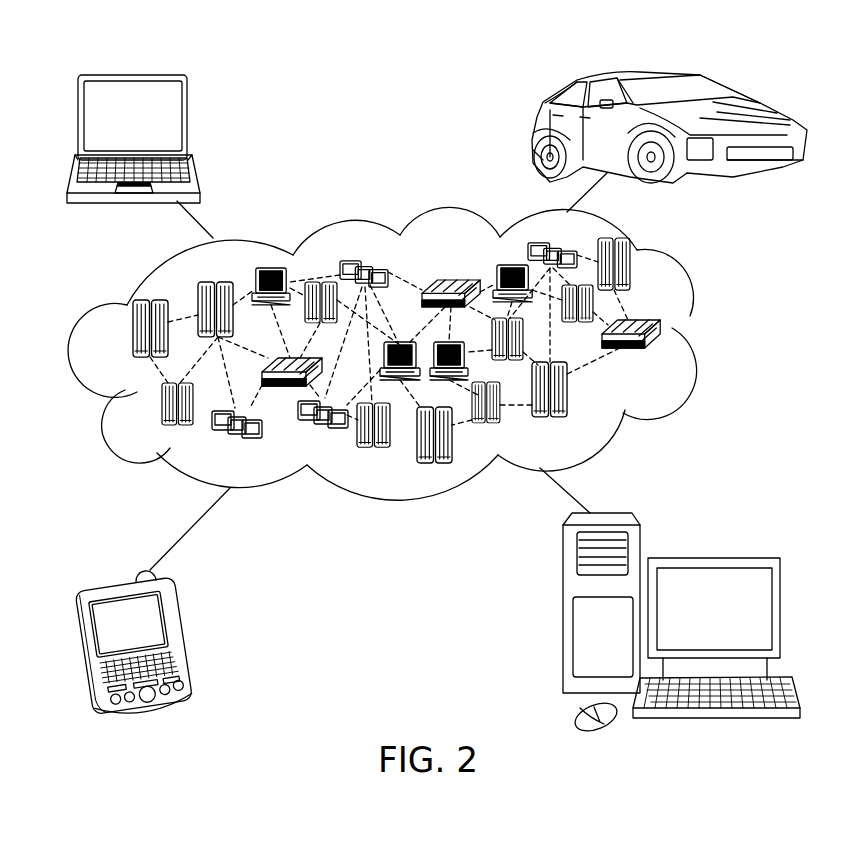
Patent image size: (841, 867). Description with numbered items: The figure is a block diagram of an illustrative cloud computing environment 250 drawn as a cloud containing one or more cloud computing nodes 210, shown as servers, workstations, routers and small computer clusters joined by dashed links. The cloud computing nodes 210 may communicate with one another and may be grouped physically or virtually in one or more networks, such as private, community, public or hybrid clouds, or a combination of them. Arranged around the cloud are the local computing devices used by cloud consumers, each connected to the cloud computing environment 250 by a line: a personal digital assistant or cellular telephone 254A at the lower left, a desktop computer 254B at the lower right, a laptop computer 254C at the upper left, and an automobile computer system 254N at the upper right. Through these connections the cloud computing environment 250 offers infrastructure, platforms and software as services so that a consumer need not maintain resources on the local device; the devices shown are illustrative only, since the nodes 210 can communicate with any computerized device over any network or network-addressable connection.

The cloud computing nodes 210 is at (665, 357).
The cloud computing environment 250 is at (710, 331).
The personal digital assistant (PDA) or cellular telephone 254A is at (188, 640).
The desktop computer 254B is at (710, 553).
The laptop computer 254C is at (190, 122).
The automobile computer system 254N is at (533, 132).